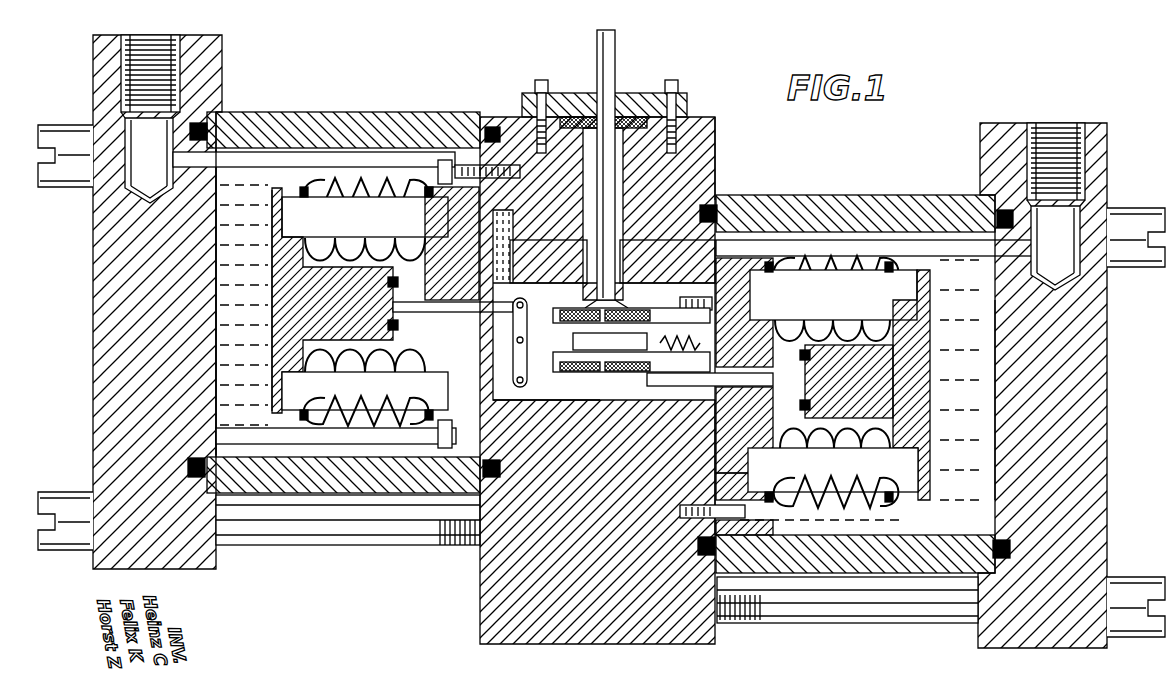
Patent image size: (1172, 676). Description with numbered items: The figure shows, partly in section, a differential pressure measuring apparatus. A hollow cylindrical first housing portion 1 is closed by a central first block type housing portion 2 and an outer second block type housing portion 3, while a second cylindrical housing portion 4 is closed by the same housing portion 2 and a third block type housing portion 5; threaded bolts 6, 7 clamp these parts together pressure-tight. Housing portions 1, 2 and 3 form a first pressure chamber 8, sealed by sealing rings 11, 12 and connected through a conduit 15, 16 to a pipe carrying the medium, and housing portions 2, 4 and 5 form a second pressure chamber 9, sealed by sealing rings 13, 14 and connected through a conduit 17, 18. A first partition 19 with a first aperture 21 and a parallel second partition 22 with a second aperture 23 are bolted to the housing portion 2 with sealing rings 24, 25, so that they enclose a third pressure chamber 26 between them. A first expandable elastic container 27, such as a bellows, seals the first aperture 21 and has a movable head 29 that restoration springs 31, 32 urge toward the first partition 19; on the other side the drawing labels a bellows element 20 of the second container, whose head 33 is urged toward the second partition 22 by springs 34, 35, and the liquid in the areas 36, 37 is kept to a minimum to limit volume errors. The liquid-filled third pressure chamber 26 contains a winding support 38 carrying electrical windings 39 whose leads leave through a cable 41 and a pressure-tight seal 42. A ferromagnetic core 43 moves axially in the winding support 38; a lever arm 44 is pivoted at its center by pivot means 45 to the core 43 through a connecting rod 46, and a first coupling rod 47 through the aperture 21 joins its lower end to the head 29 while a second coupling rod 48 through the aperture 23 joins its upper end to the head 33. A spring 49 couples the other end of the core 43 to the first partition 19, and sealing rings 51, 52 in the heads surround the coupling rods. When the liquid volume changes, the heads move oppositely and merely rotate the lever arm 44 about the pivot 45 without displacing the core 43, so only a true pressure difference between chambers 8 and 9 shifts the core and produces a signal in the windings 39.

The first housing portion 1 is at (942, 196).
The first block type housing portion 2 is at (605, 632).
The second block type housing portion 3 is at (1098, 400).
The second substantially hollow cylindrical housing portion 4 is at (293, 114).
The third block type housing portion 5 is at (100, 290).
The bolt 6 is at (80, 128).
The bolt 7 is at (1133, 212).
The first pressure chamber 8 is at (972, 450).
The second pressure chamber 9 is at (207, 352).
The sealing ring 11 is at (1011, 549).
The sealing ring 12 is at (692, 228).
The sealing ring 13 is at (500, 472).
The sealing ring 14 is at (196, 456).
The conduit 15 is at (1052, 135).
The conduit 16 is at (1028, 250).
The conduit 17 is at (158, 45).
The conduit 18 is at (175, 162).
The first partition 19 is at (738, 240).
The bellows 20 is at (360, 245).
The first aperture 21 is at (730, 392).
The second partition 22 is at (460, 163).
The second aperture 23 is at (445, 290).
The sealing ring 24 is at (447, 385).
The sealing ring 25 is at (745, 480).
The third pressure chamber 26 is at (652, 402).
The first expandable elastic container 27 is at (826, 328).
The head 29 is at (925, 402).
The restoration spring 31 is at (848, 512).
The restoration spring 32 is at (842, 256).
The head 33 is at (271, 292).
The restoration spring 34 is at (364, 430).
The restoration spring 35 is at (376, 175).
The area 36 is at (858, 340).
The area 37 is at (325, 340).
The winding support 38 is at (682, 297).
The electrical windings 39 is at (614, 372).
The cable 41 is at (617, 64).
The pressure-tight seal 42 is at (575, 130).
The core 43 is at (580, 372).
The lever arm 44 is at (545, 300).
The pivot means 45 is at (512, 340).
The connecting rod 46 is at (534, 342).
The first coupling rod 47 is at (560, 396).
The second coupling rod 48 is at (513, 252).
The spring 49 is at (704, 346).
The sealing ring 51 is at (812, 402).
The sealing ring 52 is at (387, 324).